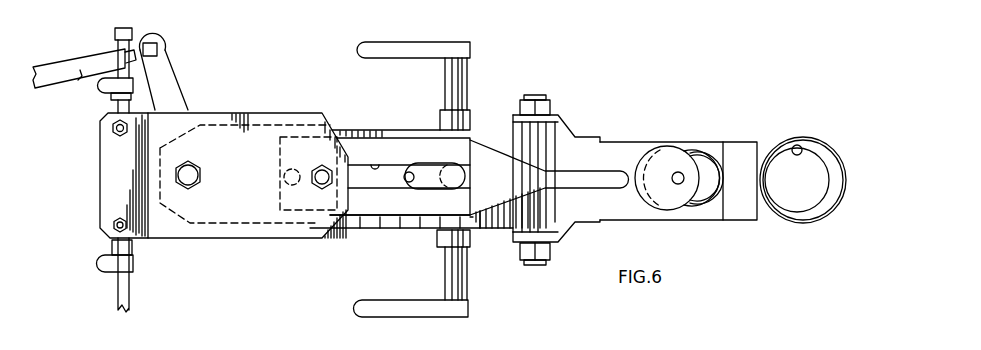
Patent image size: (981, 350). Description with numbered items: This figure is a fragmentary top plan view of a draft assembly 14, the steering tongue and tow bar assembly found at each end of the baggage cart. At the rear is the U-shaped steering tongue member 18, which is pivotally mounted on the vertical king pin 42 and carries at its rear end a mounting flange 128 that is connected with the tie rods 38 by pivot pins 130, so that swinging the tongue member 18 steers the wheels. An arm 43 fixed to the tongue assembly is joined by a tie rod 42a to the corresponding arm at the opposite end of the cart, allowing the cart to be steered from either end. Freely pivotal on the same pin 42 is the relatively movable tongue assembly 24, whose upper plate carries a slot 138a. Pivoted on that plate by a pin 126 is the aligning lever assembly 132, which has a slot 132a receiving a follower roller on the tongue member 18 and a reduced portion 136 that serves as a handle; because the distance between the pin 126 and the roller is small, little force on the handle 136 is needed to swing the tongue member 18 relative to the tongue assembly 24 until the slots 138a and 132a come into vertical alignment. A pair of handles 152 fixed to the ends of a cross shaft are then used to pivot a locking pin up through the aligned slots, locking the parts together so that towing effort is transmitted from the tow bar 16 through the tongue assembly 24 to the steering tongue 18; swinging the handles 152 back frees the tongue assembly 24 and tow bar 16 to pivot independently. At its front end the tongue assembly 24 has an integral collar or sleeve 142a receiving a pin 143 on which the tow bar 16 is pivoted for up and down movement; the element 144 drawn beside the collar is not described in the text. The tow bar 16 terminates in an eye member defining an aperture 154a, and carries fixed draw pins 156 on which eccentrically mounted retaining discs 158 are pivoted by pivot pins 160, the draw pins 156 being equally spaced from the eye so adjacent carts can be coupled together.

The draft assembly 14 is at (487, 254).
The tow bar 16 is at (766, 226).
The steering tongue member 18 is at (100, 162).
The movable tongue assembly 24 is at (356, 230).
The tie rods 38 is at (115, 38).
The king pin 42 is at (197, 183).
The tie rod 42a is at (88, 70).
The arm 43 is at (168, 83).
The pin 126 is at (280, 165).
The mounting flange 128 is at (108, 190).
The pivot pins 130 is at (108, 225).
The aligning lever assembly 132 is at (433, 150).
The slot 132a is at (375, 165).
The handle portion 136 is at (575, 182).
The slot 138a is at (412, 178).
The collar or sleeve 142a is at (560, 126).
The pin 143 is at (535, 96).
The bar 144 is at (635, 147).
The handles 152 is at (432, 50).
The aperture 154a is at (802, 148).
The draw pins 156 is at (702, 206).
The retaining discs 158 is at (657, 208).
The pivot pins 160 is at (682, 172).